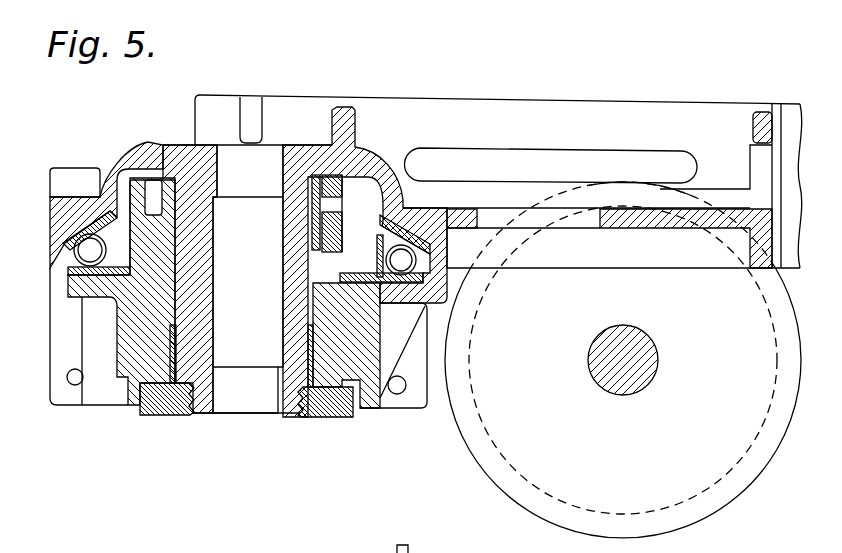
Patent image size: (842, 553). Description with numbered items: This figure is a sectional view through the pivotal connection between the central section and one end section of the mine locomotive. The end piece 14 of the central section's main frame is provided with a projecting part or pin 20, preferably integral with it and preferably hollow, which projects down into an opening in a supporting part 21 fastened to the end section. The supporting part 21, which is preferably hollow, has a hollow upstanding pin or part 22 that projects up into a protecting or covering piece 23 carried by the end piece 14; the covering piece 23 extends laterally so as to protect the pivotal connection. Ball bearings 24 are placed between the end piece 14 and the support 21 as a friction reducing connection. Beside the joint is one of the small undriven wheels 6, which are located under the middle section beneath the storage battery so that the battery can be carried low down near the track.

The small wheel 6 is at (623, 360).
The end piece 14 is at (601, 238).
The projecting part or pin 20 is at (296, 306).
The supporting part 21 is at (160, 263).
The hollow upstanding pin or part 22 is at (336, 232).
The protecting or covering piece 23 is at (372, 163).
The ball bearings 24 is at (78, 261).